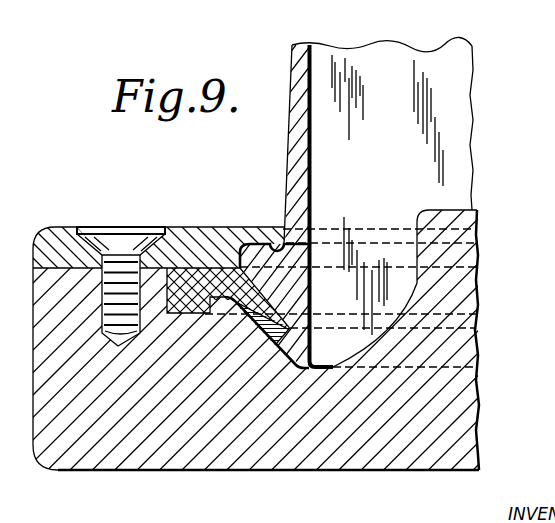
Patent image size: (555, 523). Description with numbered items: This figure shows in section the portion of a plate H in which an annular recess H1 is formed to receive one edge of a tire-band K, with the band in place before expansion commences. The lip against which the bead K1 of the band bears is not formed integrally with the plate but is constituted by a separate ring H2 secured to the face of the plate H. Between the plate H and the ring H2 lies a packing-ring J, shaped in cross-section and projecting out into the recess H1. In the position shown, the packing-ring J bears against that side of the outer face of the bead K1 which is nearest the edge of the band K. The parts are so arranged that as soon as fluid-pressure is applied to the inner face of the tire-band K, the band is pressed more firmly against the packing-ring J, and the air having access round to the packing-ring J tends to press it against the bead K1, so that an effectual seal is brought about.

The plate H is at (187, 413).
The recess H1 is at (380, 307).
The ring H2 is at (237, 246).
The packing-ring J is at (218, 277).
The tire-band K is at (290, 162).
The bead K1 is at (268, 270).